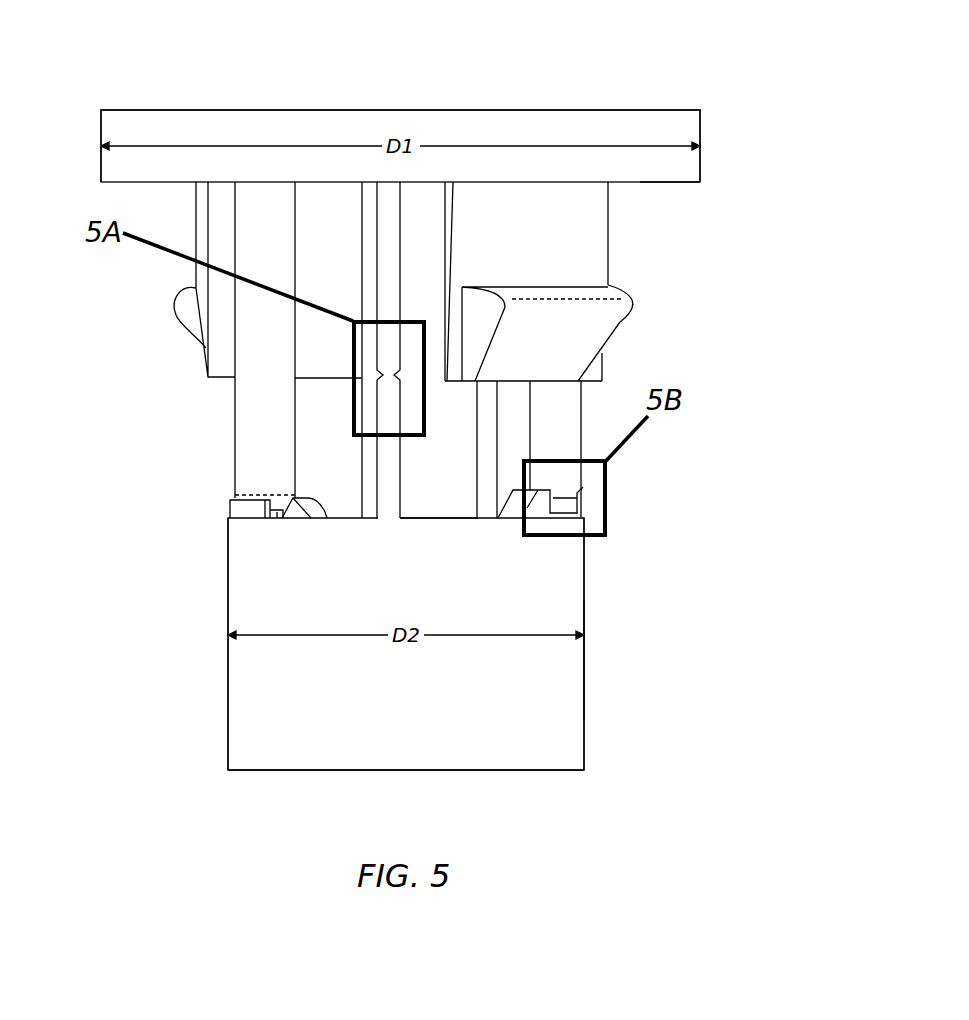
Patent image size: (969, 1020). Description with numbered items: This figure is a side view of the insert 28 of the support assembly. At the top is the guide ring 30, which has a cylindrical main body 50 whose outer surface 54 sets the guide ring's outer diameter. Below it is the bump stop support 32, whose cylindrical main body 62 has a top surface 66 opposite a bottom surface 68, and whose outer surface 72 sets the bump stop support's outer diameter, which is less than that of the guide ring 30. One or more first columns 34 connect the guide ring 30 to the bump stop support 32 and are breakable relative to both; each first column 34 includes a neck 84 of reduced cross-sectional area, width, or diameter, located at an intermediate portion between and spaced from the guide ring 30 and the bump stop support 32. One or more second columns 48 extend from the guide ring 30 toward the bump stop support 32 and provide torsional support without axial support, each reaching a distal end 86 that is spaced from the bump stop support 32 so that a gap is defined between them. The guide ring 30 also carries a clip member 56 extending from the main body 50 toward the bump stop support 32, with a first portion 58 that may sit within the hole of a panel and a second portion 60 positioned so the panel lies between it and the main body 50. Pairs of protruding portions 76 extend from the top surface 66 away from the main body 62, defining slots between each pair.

The insert 28 is at (633, 48).
The guide ring 30 is at (299, 122).
The bump stop support 32 is at (560, 713).
The first column 34 is at (370, 455).
The second column 48 is at (245, 425).
The main body 50 is at (670, 172).
The outer surface 54 is at (100, 127).
The clip member 56 is at (597, 273).
The first portion 58 is at (597, 222).
The second portion 60 is at (600, 318).
The main body 62 is at (573, 662).
The top surface 66 is at (455, 517).
The bottom surface 68 is at (560, 772).
The outer surface 72 is at (227, 682).
The protruding portions 76 is at (240, 510).
The neck 84 is at (401, 377).
The distal end 86 is at (280, 518).